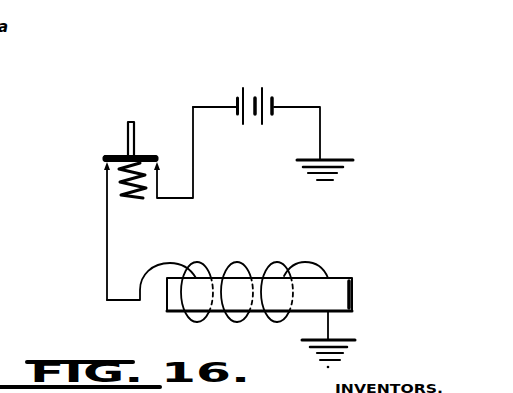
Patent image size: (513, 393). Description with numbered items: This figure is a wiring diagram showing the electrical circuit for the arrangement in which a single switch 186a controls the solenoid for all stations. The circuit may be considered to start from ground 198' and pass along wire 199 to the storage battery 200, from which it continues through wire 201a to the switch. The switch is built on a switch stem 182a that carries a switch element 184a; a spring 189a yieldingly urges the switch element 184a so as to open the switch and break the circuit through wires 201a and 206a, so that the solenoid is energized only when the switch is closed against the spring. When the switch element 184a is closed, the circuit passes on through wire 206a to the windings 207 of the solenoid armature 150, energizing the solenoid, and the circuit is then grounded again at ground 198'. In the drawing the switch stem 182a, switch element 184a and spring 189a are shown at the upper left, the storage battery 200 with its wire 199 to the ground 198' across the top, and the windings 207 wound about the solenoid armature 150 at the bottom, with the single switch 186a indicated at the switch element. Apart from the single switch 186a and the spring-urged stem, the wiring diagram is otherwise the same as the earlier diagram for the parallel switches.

The switch stem 182a is at (127, 133).
The switch element 184a is at (104, 161).
The single switch 186a is at (153, 149).
The spring 189a is at (117, 188).
The wire 201a is at (223, 104).
The storage battery 200 is at (247, 89).
The wire 199 is at (298, 104).
The ground 198' is at (358, 267).
The solenoid armature 150 is at (335, 277).
The wire 206a is at (122, 301).
The windings 207 is at (234, 322).